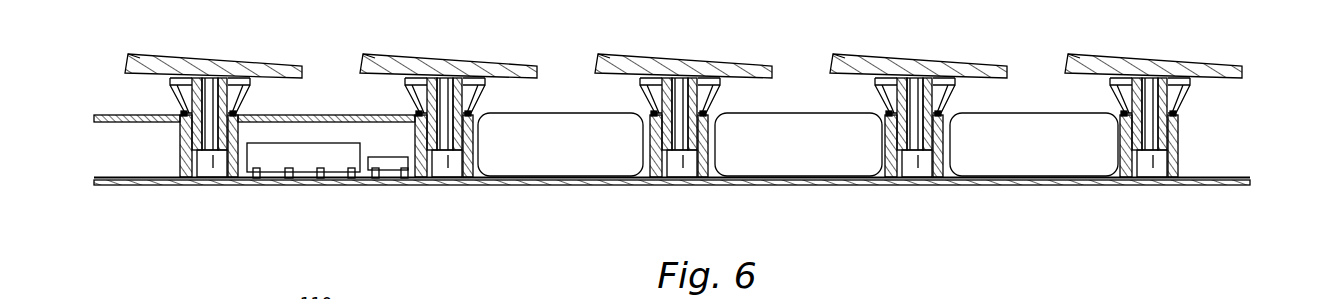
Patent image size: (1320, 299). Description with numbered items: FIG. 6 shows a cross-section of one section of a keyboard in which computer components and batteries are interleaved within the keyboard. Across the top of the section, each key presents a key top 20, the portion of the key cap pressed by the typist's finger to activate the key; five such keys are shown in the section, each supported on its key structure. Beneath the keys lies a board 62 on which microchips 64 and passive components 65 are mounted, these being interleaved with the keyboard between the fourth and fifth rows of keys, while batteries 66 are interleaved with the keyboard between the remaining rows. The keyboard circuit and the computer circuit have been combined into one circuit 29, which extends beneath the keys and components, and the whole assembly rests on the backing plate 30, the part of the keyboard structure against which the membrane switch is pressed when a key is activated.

The key top 20 is at (228, 56).
The circuit board 62 is at (254, 105).
The microchips 64 is at (310, 143).
The passive components 65 is at (402, 157).
The batteries 66 is at (588, 112).
The combined circuit 29 is at (165, 177).
The backing plate 30 is at (152, 190).